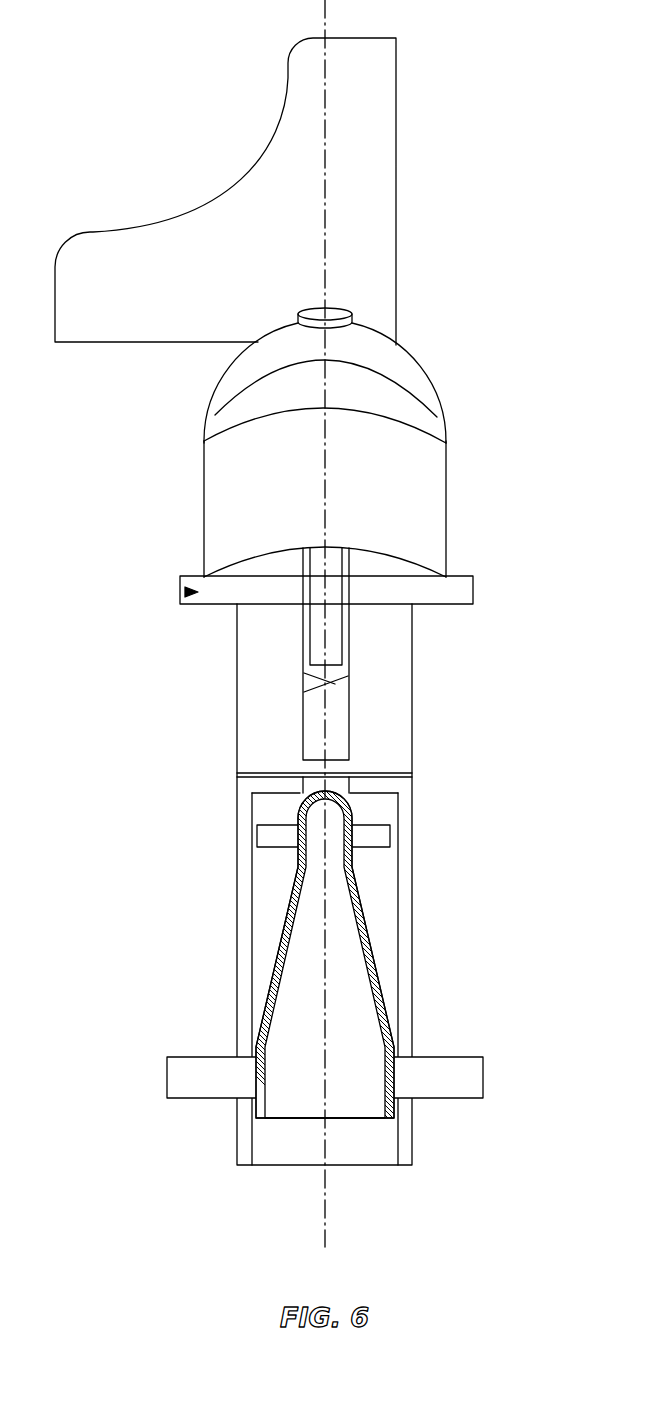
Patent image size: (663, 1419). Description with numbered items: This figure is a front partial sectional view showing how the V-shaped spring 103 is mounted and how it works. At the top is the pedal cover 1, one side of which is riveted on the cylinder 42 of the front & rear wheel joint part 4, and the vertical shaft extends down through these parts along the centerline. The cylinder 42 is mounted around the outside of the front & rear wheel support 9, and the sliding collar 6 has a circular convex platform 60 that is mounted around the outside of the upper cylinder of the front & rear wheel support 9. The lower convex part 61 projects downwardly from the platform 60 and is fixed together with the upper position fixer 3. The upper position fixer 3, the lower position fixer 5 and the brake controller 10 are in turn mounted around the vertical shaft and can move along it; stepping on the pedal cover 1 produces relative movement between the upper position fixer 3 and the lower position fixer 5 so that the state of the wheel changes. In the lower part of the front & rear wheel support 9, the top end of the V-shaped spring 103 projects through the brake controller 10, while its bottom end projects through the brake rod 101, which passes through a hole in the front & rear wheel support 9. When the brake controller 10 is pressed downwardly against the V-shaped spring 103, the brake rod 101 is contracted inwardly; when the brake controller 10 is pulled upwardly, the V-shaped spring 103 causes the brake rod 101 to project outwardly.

The front & rear wheel joint part 4 is at (382, 135).
The cylinder 42 is at (400, 360).
The pedal cover 1 is at (437, 495).
The circular convex platform 60 is at (463, 593).
The sliding collar 6 is at (187, 592).
The front & rear wheel support 9 is at (248, 757).
The lower position fixer 5 is at (335, 738).
The lower convex part 61 is at (332, 643).
The upper position fixer 3 is at (335, 684).
The brake controller 10 is at (387, 837).
The brake rod 101 is at (445, 1063).
The V-shaped spring 103 is at (275, 965).